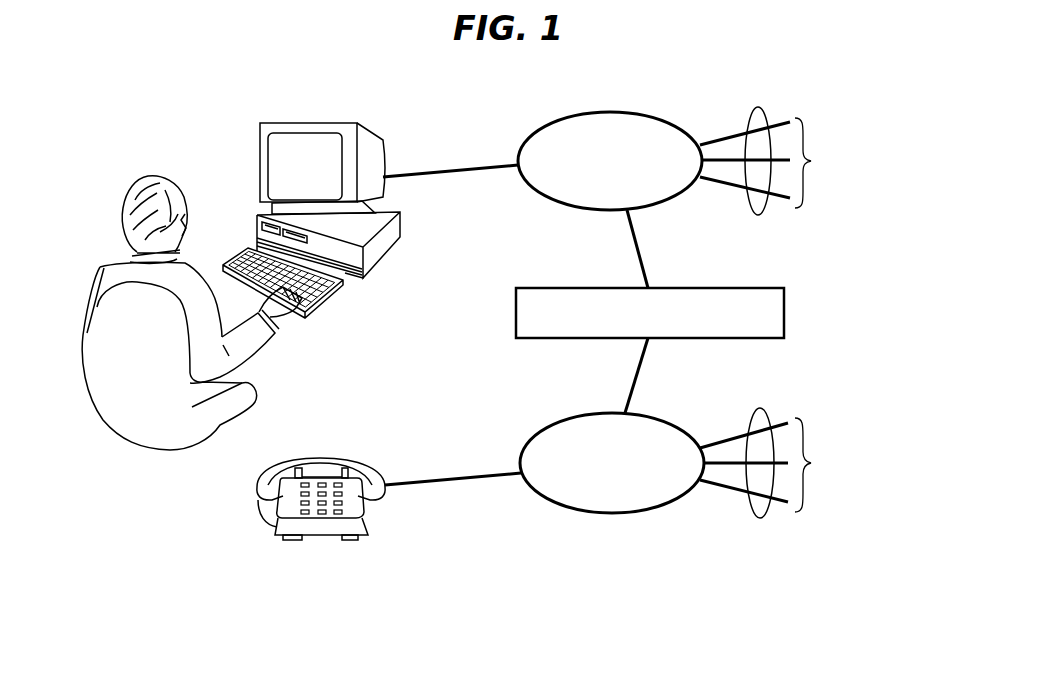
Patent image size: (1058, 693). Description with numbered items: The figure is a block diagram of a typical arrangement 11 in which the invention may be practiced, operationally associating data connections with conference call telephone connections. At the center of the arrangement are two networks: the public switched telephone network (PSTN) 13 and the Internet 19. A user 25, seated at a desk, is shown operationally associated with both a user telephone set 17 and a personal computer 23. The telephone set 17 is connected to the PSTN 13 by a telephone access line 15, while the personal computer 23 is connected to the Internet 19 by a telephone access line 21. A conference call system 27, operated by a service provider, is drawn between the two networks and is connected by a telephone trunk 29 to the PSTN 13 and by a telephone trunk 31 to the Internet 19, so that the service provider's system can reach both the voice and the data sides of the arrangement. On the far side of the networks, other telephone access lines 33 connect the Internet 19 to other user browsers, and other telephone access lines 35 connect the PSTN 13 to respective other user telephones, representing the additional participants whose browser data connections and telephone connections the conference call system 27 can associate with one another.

The arrangement 11 is at (434, 335).
The public switched telephone network (PSTN) 13 is at (608, 514).
The telephone access line 15 is at (460, 477).
The user telephone set 17 is at (322, 541).
The Internet 19 is at (663, 118).
The telephone access line 21 is at (467, 165).
The personal computer 23 is at (260, 123).
The user 25 is at (148, 176).
The conference call system 27 is at (733, 288).
The telephone trunk 29 is at (640, 373).
The telephone trunk 31 is at (630, 247).
The other telephone access lines 33 is at (763, 214).
The other telephone access lines 35 is at (762, 517).